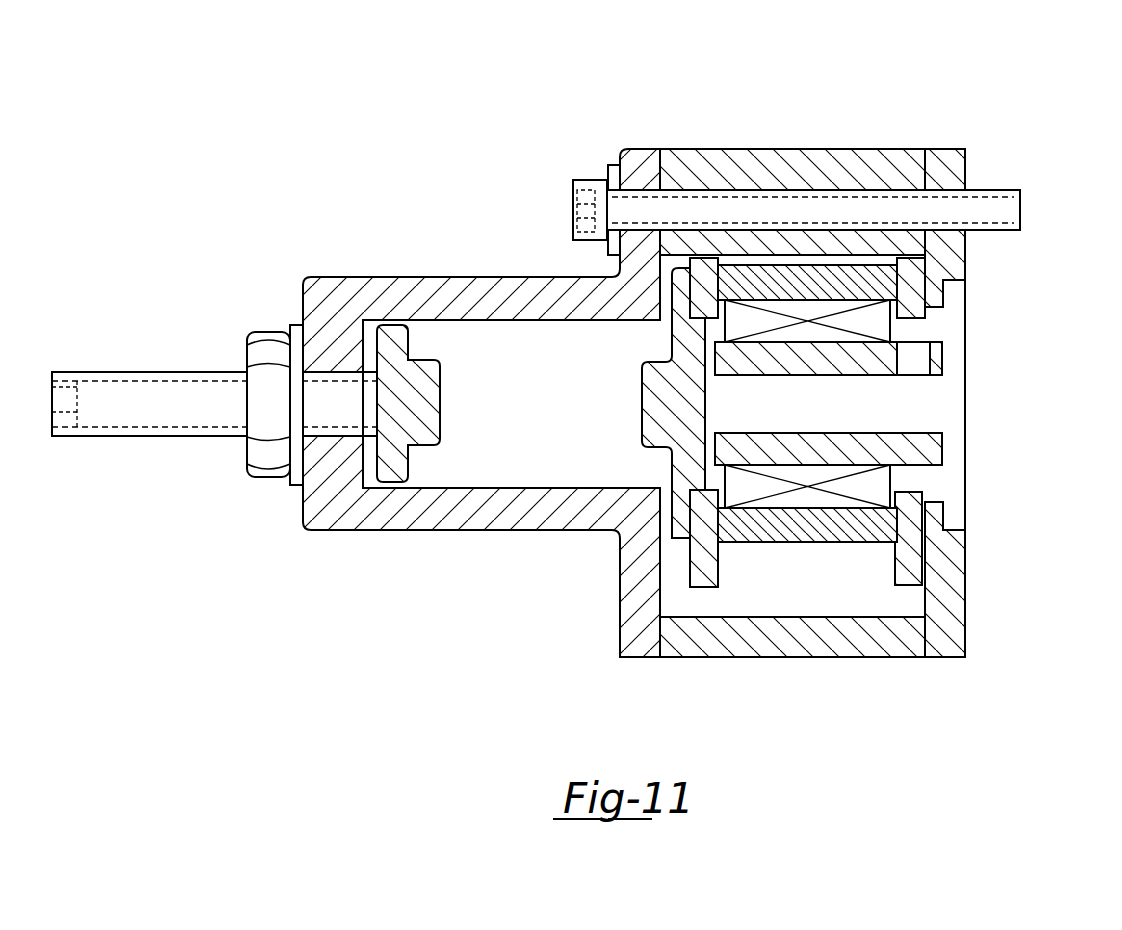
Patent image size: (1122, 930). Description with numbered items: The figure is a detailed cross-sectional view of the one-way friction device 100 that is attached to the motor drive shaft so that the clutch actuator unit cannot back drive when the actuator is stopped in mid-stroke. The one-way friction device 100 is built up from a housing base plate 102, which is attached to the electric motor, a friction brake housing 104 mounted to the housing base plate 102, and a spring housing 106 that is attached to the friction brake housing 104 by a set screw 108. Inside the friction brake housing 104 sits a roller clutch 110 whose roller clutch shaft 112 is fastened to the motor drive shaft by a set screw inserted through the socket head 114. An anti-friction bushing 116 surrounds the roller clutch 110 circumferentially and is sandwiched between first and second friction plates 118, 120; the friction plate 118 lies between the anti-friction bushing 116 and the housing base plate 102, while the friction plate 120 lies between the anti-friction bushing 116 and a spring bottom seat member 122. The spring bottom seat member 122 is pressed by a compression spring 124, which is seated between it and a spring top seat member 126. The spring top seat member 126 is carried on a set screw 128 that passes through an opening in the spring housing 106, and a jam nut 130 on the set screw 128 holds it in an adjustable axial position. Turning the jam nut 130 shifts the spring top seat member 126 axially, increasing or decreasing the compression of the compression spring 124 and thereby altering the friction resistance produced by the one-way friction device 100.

The one-way friction device 100 is at (540, 596).
The housing base plate 102 is at (940, 148).
The friction brake housing 104 is at (722, 150).
The spring housing 106 is at (422, 277).
The set screw 108 is at (573, 192).
The roller clutch 110 is at (803, 313).
The roller clutch shaft 112 is at (940, 468).
The socket head 114 is at (917, 340).
The anti-friction bushing 116 is at (817, 543).
The first friction plate 118 is at (910, 577).
The second friction plate 120 is at (720, 587).
The spring bottom seat member 122 is at (672, 542).
The compression spring 124 is at (508, 455).
The spring top seat member 126 is at (393, 483).
The set screw 128 is at (173, 437).
The jam nut 130 is at (270, 477).